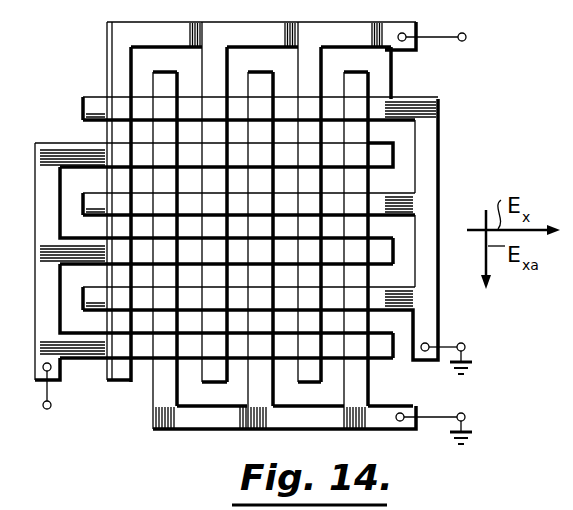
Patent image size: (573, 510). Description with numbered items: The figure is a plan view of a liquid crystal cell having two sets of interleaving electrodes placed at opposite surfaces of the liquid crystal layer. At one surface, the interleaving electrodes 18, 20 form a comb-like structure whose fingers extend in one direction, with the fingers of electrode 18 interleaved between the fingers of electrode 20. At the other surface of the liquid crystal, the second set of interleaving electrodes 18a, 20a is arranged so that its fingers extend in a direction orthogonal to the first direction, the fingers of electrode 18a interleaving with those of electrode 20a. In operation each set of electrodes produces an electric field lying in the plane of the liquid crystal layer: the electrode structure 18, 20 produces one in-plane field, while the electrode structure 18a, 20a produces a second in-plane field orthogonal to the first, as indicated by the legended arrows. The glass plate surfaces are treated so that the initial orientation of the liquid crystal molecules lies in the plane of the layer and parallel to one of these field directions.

The interleaving electrode 18 is at (117, 34).
The interleaving electrode 18a is at (70, 150).
The interleaving electrode 20 is at (160, 420).
The interleaving electrode 20a is at (426, 133).